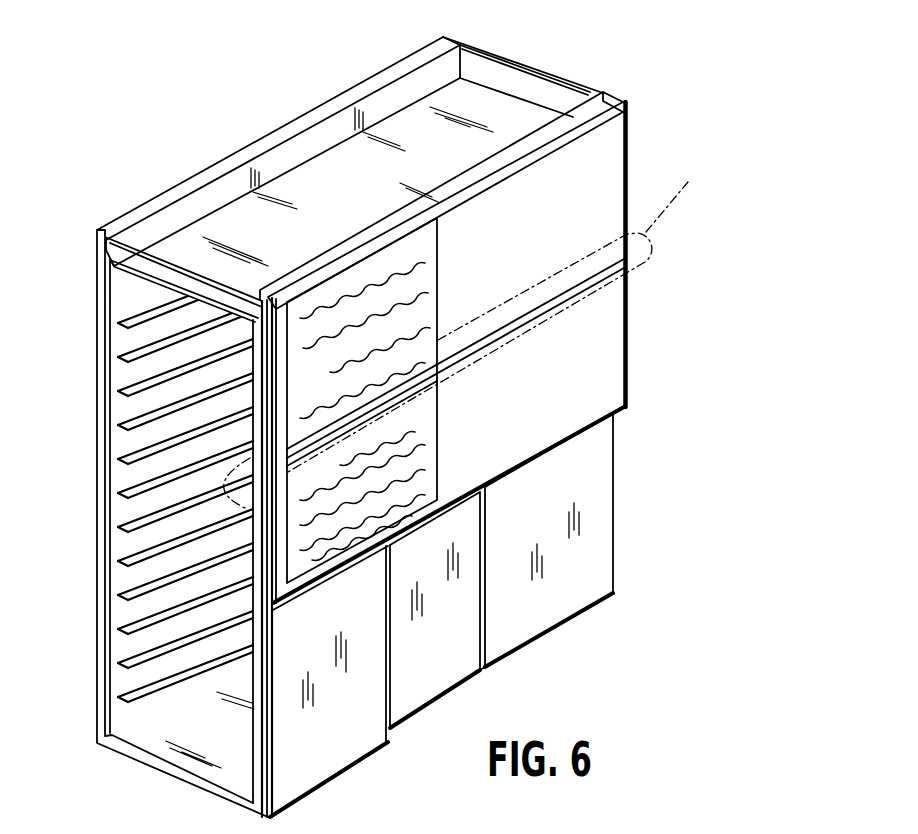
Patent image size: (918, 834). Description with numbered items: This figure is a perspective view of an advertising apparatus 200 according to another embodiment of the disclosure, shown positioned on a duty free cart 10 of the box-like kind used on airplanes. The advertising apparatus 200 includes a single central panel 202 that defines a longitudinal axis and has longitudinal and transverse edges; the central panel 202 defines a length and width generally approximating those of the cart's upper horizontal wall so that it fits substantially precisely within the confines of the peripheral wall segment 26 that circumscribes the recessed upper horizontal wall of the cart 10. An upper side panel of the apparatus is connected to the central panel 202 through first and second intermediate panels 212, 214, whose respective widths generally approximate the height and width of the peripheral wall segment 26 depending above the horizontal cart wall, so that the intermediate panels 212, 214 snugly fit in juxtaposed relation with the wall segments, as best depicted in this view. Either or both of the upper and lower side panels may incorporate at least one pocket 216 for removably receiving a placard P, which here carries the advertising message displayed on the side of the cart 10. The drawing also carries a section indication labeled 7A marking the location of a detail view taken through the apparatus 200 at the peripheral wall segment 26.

The cart 10 is at (626, 503).
The peripheral wall segment 26 is at (540, 87).
The advertising apparatus 200 is at (388, 352).
The central panel 202 is at (350, 204).
The first intermediate panel 212 is at (185, 207).
The second intermediate panel 214 is at (390, 164).
The pocket 216 is at (304, 370).
The section line 7A is at (647, 366).
The placard P is at (311, 348).